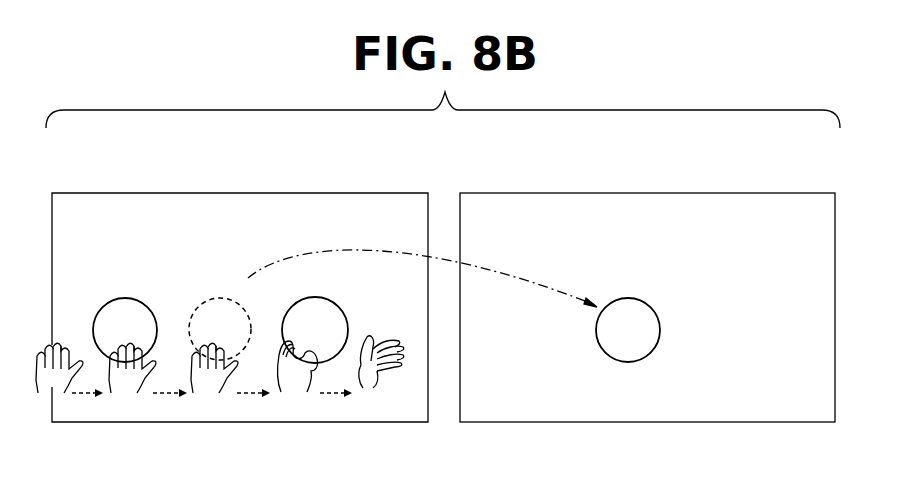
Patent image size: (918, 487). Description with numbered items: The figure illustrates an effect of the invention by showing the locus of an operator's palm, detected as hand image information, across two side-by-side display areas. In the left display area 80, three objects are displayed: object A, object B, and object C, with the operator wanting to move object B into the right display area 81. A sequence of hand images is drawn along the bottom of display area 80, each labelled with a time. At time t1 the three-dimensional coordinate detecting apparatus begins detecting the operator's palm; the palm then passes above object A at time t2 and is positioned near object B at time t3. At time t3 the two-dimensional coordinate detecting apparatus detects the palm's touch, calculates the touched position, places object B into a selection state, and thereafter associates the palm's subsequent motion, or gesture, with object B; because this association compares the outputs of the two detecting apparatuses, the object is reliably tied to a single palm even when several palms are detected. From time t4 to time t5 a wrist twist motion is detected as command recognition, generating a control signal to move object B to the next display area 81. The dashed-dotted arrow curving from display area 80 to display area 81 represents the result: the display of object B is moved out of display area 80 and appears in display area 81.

The display area 80 is at (401, 192).
The display area 81 is at (807, 192).
The object A is at (125, 330).
The object B is at (220, 329).
The object C is at (315, 330).
The time t1 is at (59, 399).
The time t2 is at (132, 399).
The time t3 is at (214, 399).
The time t4 is at (298, 398).
The time t5 is at (381, 396).